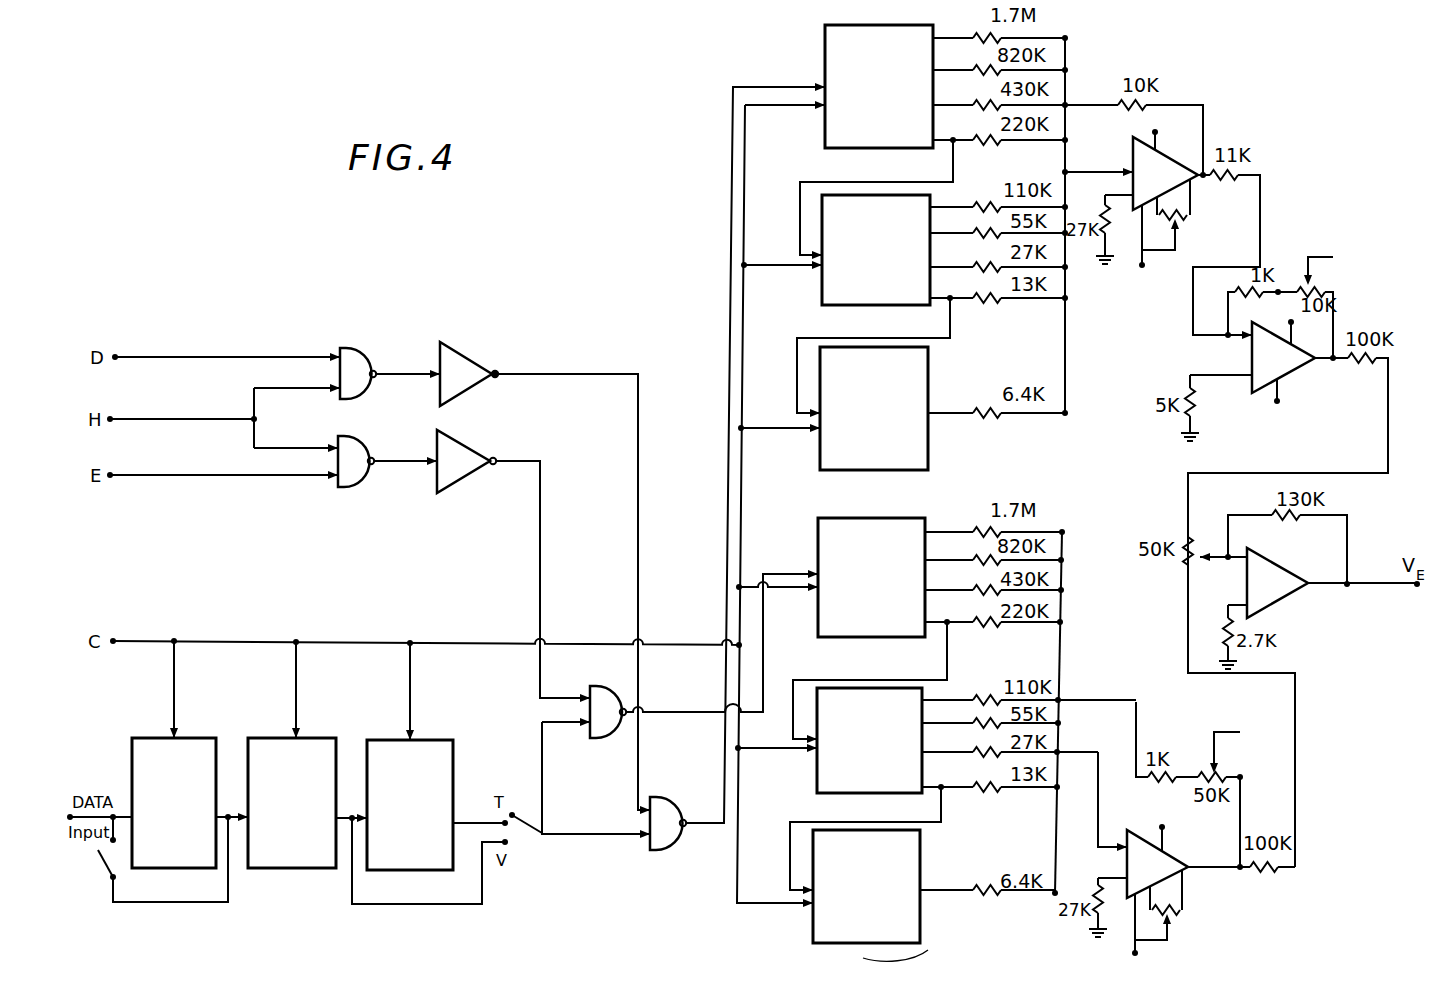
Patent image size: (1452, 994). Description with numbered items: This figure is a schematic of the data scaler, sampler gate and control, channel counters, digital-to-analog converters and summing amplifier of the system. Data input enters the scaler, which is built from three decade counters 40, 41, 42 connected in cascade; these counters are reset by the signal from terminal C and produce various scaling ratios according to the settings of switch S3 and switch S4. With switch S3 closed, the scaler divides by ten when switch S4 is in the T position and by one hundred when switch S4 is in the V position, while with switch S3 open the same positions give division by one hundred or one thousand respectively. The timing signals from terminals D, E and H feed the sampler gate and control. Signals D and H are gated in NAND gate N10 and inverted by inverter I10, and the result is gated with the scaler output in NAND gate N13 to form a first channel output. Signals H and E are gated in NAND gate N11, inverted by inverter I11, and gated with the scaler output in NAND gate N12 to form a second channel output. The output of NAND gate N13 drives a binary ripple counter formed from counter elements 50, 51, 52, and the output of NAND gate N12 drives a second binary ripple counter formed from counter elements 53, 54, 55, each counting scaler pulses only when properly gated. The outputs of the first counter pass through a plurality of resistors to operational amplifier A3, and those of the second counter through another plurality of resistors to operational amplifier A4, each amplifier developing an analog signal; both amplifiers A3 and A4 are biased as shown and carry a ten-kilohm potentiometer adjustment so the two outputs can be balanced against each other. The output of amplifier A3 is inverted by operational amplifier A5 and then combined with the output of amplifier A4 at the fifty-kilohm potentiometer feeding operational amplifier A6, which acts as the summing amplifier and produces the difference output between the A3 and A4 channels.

The decade counter 40 is at (198, 740).
The decade counter 41 is at (306, 740).
The decade counter 42 is at (424, 740).
The binary ripple counter element 50 is at (825, 70).
The binary ripple counter element 51 is at (815, 290).
The binary ripple counter element 52 is at (820, 472).
The binary ripple counter element 53 is at (818, 562).
The binary ripple counter element 54 is at (816, 780).
The binary ripple counter element 55 is at (813, 936).
The NAND gate N10 is at (374, 352).
The NAND gate N11 is at (374, 441).
The NAND gate N12 is at (612, 689).
The NAND gate N13 is at (678, 803).
The inverter I10 is at (480, 352).
The inverter I11 is at (478, 437).
The operational amplifier A3 is at (1133, 183).
The operational amplifier A4 is at (1127, 857).
The operational amplifier A5 is at (1252, 350).
The operational amplifier A6 is at (1288, 560).
The switch S3 is at (97, 872).
The switch S4 is at (529, 838).